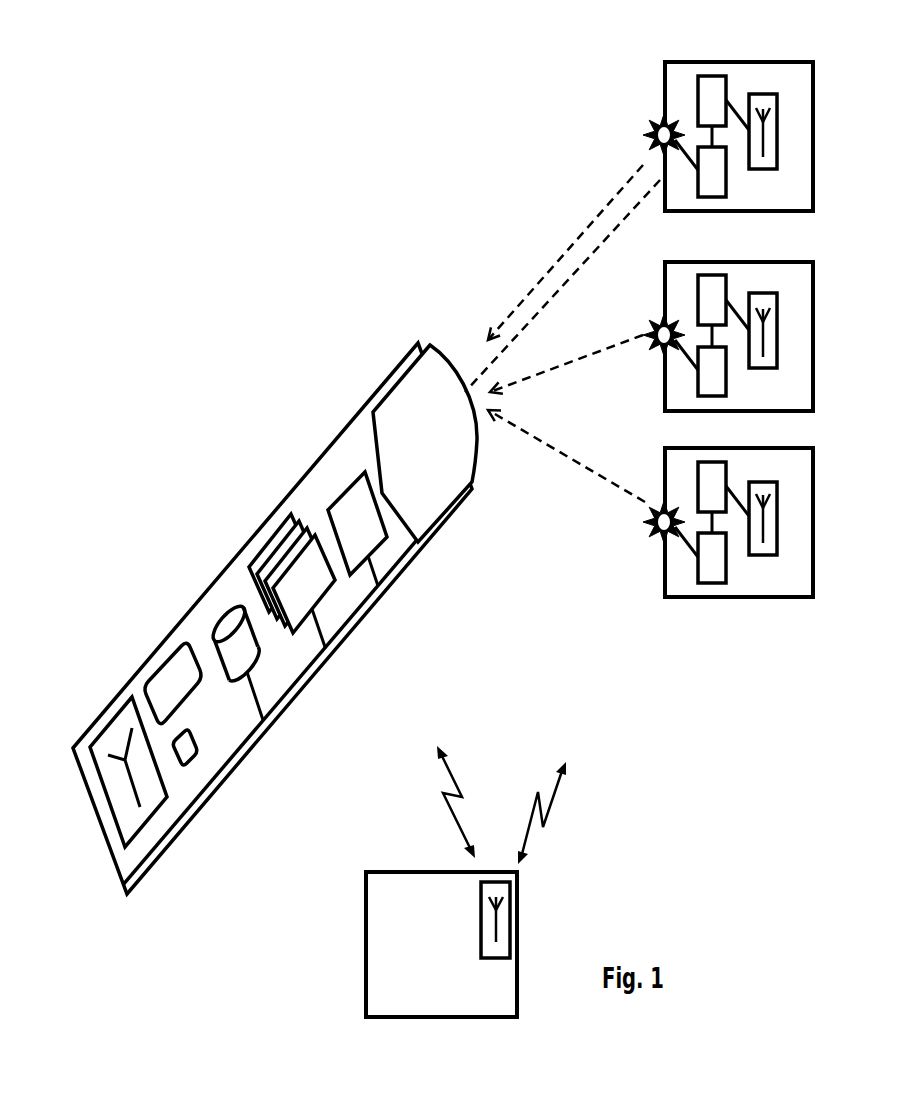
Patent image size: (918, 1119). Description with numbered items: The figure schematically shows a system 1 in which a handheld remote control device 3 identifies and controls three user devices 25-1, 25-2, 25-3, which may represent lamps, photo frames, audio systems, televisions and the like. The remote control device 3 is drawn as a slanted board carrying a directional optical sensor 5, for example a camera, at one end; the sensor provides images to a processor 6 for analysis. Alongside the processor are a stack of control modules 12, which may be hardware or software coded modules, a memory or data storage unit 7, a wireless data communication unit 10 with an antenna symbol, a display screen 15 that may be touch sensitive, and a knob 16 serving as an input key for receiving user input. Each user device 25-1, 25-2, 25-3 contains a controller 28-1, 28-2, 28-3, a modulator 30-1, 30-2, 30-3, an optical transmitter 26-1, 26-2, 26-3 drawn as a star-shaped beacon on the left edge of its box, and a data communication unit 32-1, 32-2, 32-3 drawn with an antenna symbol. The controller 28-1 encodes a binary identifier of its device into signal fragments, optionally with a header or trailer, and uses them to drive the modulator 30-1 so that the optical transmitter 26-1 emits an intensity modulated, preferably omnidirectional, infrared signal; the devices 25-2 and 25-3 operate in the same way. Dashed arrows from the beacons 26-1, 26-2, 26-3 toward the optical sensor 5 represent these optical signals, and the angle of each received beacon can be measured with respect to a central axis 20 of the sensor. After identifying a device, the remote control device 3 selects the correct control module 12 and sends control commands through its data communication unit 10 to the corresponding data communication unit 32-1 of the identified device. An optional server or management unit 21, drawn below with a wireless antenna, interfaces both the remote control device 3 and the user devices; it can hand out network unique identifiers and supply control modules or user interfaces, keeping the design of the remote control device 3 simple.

The system 1 is at (198, 129).
The remote control device 3 is at (408, 566).
The directional optical sensor 5 is at (387, 395).
The processor 6 is at (345, 490).
The memory or data storage unit 7 is at (232, 607).
The wireless data communication unit 10 is at (113, 706).
The control modules 12 is at (280, 506).
The display screen 15 is at (183, 630).
The knob 16 is at (183, 768).
The central axis 20 is at (578, 267).
The server or management unit 21 is at (366, 923).
The user device 25-1 is at (813, 145).
The user device 25-2 is at (813, 377).
The user device 25-3 is at (795, 598).
The optical transmitter 26-1 is at (664, 112).
The optical transmitter 26-2 is at (657, 310).
The optical transmitter 26-3 is at (655, 545).
The controller 28-1 is at (696, 86).
The controller 28-2 is at (697, 297).
The controller 28-3 is at (697, 483).
The modulator 30-1 is at (712, 210).
The modulator 30-2 is at (727, 385).
The modulator 30-3 is at (719, 585).
The data communication unit 32-1 is at (777, 114).
The data communication unit 32-2 is at (778, 318).
The data communication unit 32-3 is at (770, 557).